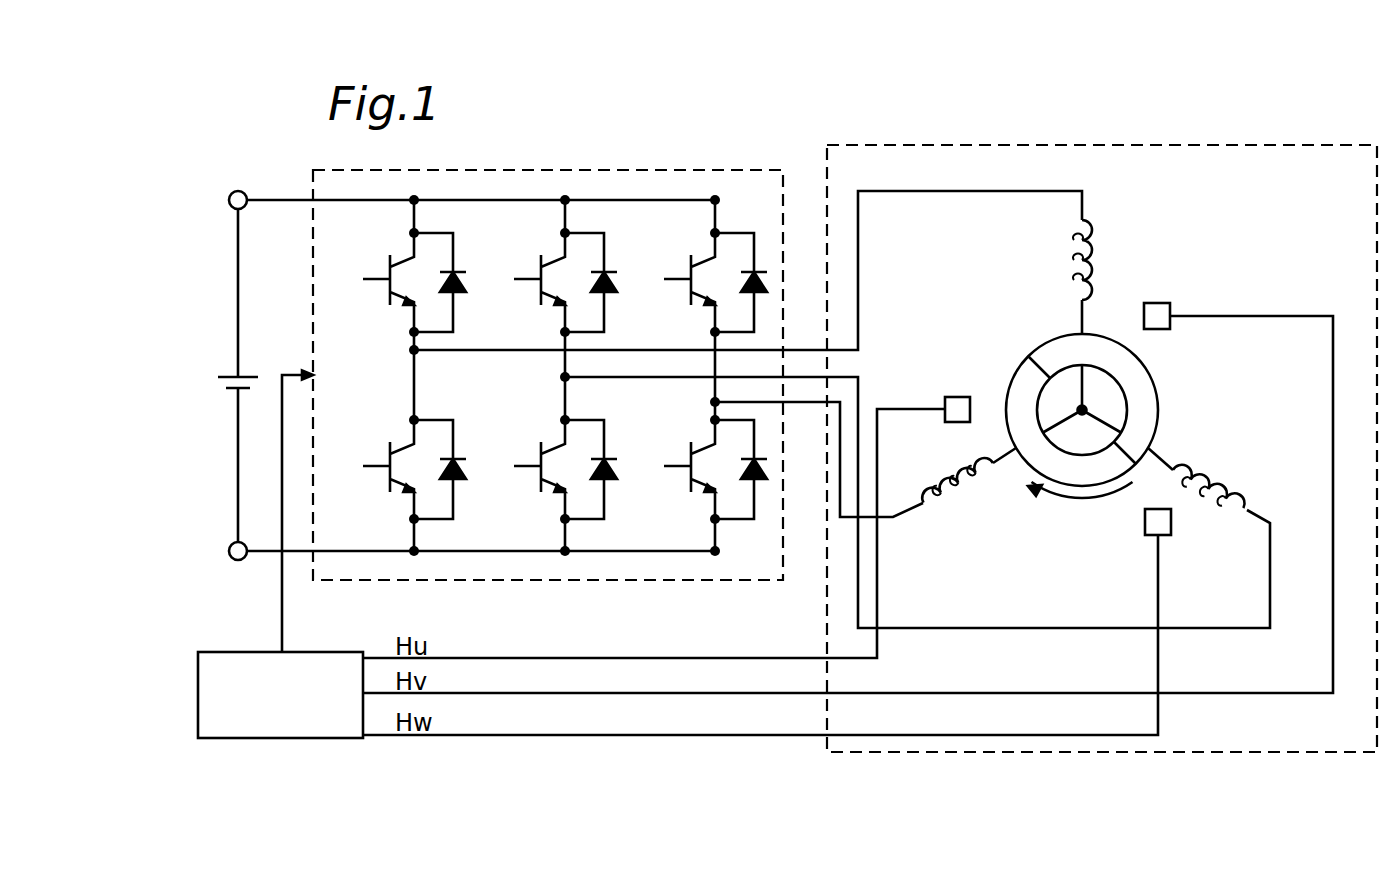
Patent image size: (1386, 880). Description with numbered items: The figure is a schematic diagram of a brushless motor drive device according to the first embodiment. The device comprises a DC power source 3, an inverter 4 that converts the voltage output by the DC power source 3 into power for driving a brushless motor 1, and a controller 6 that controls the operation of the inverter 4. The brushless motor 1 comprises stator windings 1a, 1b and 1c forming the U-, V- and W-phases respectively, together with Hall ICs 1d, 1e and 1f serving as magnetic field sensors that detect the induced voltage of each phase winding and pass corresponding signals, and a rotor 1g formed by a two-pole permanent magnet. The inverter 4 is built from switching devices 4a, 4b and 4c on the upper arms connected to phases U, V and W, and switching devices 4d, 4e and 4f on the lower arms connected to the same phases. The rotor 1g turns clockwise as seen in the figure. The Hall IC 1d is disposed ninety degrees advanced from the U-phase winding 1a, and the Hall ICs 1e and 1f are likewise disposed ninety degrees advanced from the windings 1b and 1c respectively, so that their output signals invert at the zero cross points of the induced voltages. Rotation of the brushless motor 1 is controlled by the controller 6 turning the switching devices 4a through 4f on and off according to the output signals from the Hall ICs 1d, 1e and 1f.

The brushless motor 1 is at (1032, 145).
The stator winding 1a is at (1073, 265).
The stator winding 1b is at (1202, 513).
The stator winding 1c is at (955, 502).
The Hall IC 1d is at (954, 397).
The Hall IC 1e is at (1152, 303).
The Hall IC 1f is at (1145, 523).
The rotor 1g is at (1158, 401).
The DC power source 3 is at (250, 378).
The inverter 4 is at (534, 170).
The switching device 4a is at (392, 305).
The switching device 4b is at (543, 305).
The switching device 4c is at (693, 305).
The switching device 4d is at (392, 493).
The switching device 4e is at (543, 493).
The switching device 4f is at (690, 493).
The controller 6 is at (249, 653).